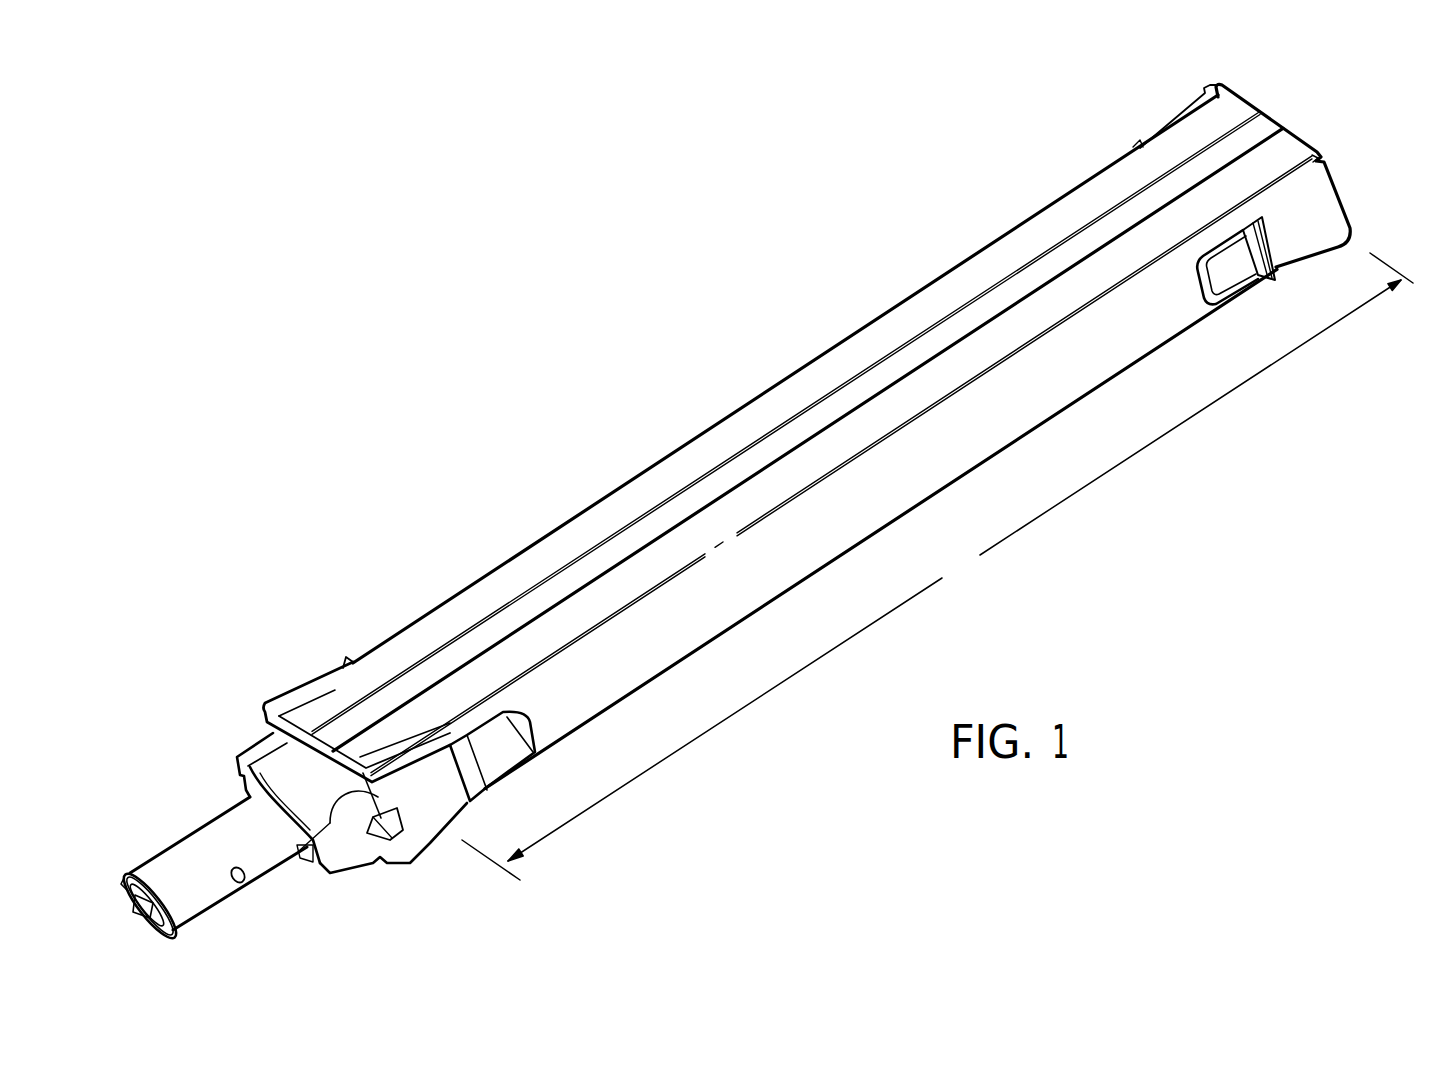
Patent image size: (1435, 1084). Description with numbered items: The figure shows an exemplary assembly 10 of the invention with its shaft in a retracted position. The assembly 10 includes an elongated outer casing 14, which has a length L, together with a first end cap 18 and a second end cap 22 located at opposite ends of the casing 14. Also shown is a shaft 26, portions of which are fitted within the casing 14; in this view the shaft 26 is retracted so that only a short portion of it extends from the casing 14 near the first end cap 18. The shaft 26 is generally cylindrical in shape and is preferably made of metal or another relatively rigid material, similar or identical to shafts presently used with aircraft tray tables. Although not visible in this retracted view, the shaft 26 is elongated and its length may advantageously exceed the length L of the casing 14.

The assembly 10 is at (765, 503).
The outer casing 14 is at (767, 407).
The first end cap 18 is at (493, 752).
The second end cap 22 is at (1327, 194).
The shaft 26 is at (201, 840).